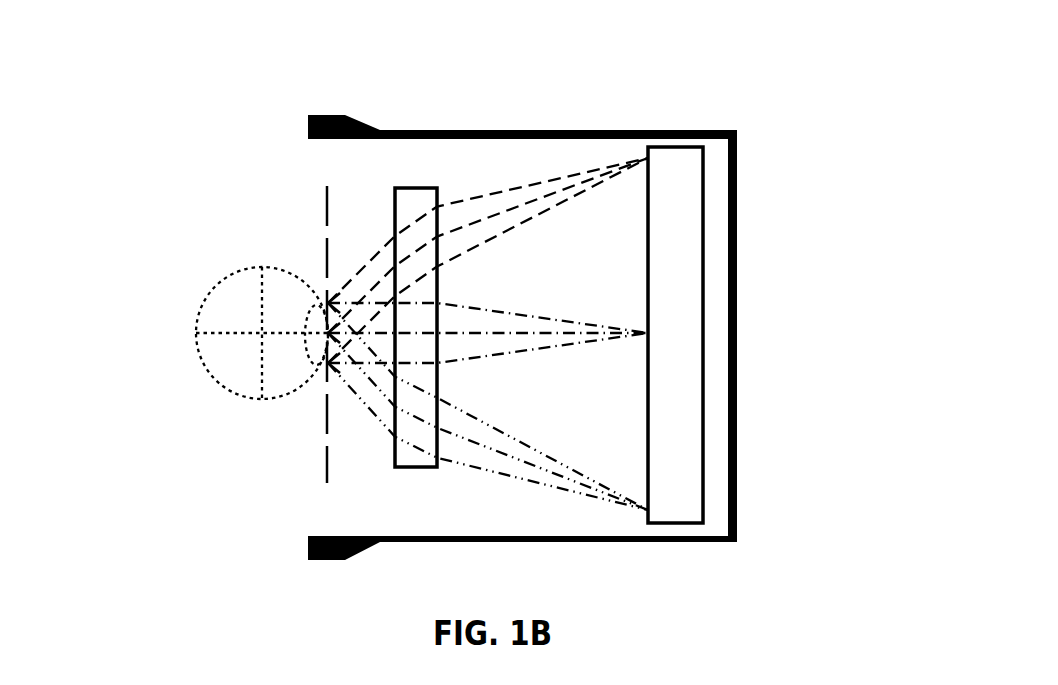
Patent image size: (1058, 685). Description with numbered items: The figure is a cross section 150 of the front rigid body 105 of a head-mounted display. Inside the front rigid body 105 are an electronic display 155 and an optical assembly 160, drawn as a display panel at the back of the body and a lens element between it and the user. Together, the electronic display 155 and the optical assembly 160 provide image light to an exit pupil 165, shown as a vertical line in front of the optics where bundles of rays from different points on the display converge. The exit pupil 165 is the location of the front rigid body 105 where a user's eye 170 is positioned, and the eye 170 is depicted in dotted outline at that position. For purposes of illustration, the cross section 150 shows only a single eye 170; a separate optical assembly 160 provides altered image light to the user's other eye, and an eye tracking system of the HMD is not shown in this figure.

The cross section 150 is at (85, 38).
The front rigid body 105 is at (706, 131).
The electronic display 155 is at (703, 178).
The optical assembly 160 is at (395, 207).
The exit pupil 165 is at (325, 465).
The eye 170 is at (228, 283).